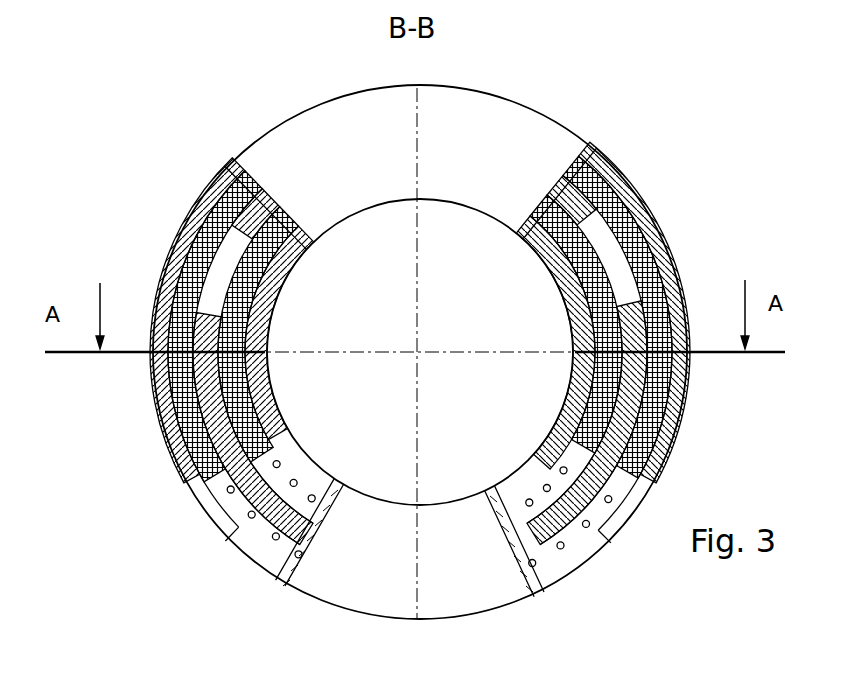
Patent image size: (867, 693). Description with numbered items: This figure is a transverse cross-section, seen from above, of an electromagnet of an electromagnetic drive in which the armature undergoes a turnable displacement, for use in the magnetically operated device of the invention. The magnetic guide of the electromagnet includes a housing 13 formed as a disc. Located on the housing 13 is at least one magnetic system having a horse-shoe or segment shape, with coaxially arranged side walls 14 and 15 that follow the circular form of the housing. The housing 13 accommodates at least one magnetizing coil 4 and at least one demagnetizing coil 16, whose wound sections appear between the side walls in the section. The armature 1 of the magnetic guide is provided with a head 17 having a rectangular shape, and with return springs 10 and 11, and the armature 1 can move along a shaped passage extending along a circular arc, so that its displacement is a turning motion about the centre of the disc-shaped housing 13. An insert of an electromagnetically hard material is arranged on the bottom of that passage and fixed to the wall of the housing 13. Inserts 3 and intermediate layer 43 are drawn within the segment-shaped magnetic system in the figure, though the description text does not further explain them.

The armature 1 is at (629, 364).
The wedge insert 3 is at (250, 217).
The magnetizing coil 4 is at (625, 227).
The return spring 10 is at (560, 545).
The return spring 11 is at (273, 537).
The housing 13 is at (500, 140).
The side wall 14 is at (187, 480).
The side wall 15 is at (243, 377).
The demagnetizing coil 16 is at (180, 233).
The head 17 is at (297, 578).
The intermediate layer 43 is at (620, 272).